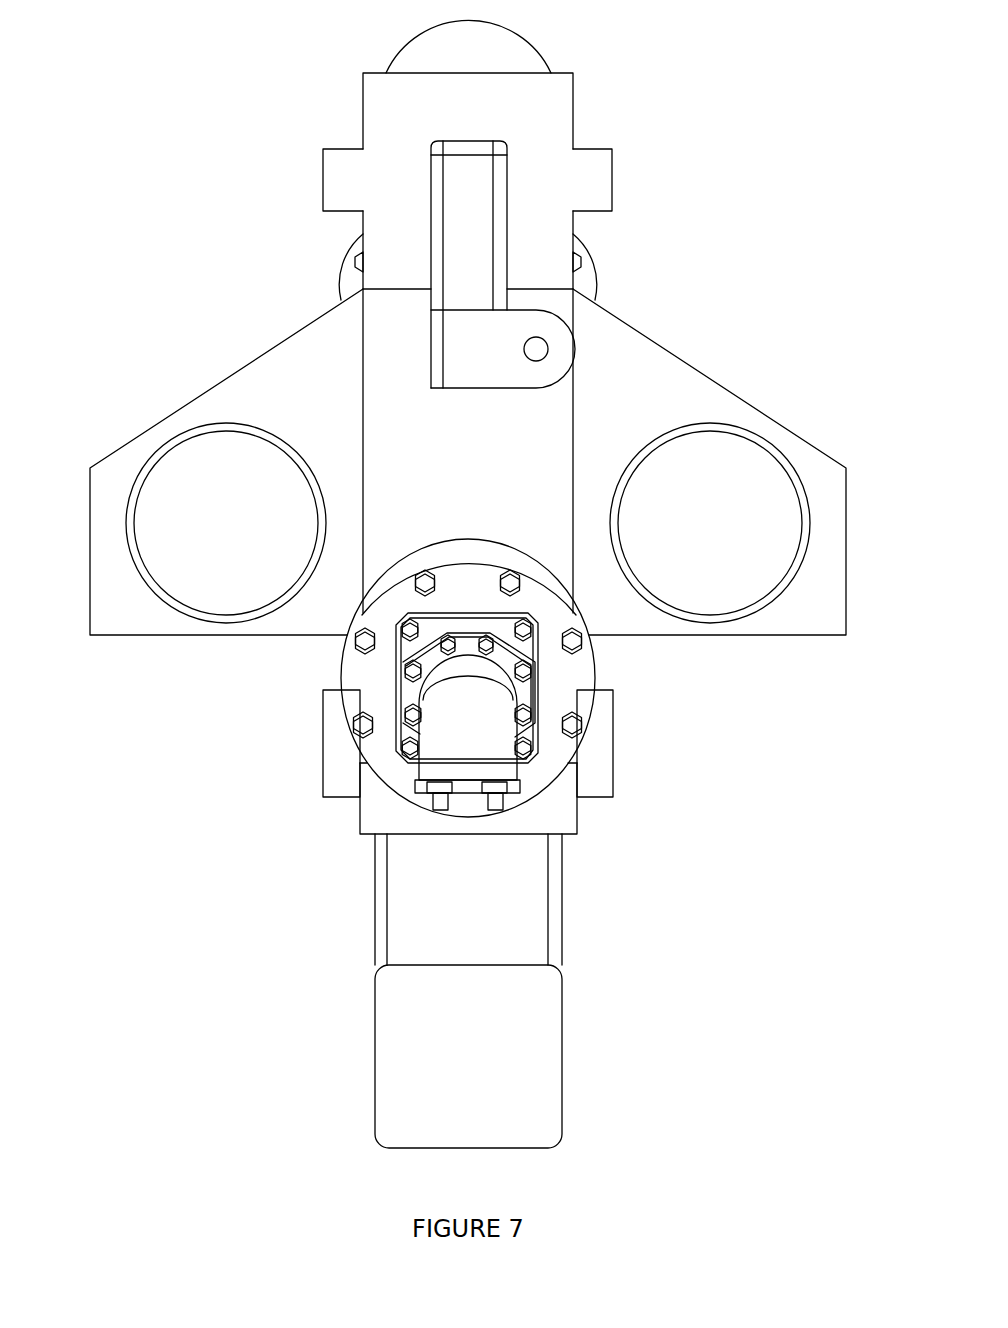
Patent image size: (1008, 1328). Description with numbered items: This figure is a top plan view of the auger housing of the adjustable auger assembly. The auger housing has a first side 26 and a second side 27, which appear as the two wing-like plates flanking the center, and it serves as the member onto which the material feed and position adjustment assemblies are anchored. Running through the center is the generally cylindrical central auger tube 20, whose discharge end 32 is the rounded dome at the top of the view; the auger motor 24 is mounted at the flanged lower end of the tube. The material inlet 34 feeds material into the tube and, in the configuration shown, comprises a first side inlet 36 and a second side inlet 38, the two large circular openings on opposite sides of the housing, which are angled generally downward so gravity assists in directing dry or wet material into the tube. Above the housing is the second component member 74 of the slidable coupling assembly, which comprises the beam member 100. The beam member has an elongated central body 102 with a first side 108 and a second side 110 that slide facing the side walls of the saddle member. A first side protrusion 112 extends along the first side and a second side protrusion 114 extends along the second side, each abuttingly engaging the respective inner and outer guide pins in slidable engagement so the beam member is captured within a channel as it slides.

The central auger tube 20 is at (578, 643).
The auger motor 24 is at (498, 713).
The first side 26 is at (227, 378).
The second side 27 is at (713, 380).
The discharge end 32 is at (418, 37).
The material inlet 34 is at (468, 490).
The first side inlet 36 is at (124, 523).
The second side inlet 38 is at (811, 523).
The second component member 74 is at (467, 307).
The beam member 100 is at (642, 203).
The elongated central body 102 is at (378, 114).
The first side 108 is at (361, 232).
The second side 110 is at (574, 227).
The first side protrusion 112 is at (323, 182).
The second side protrusion 114 is at (613, 163).